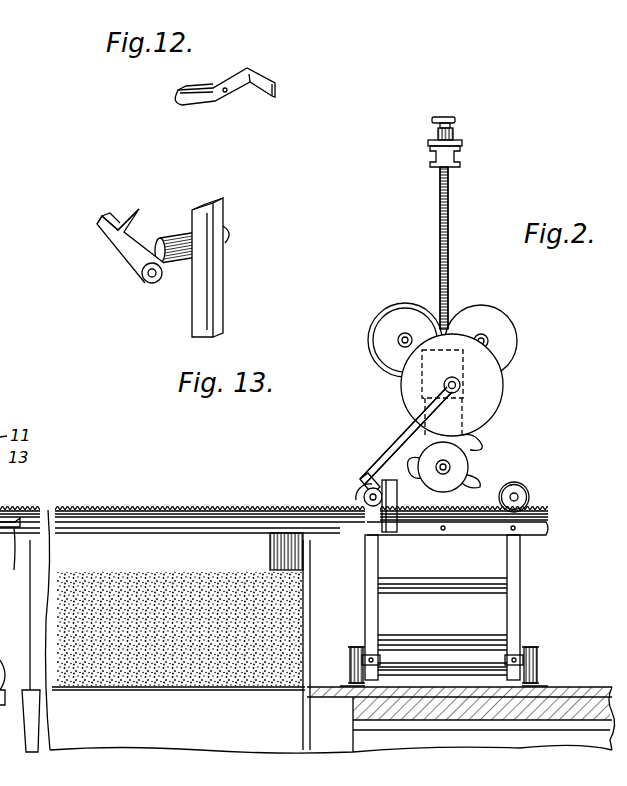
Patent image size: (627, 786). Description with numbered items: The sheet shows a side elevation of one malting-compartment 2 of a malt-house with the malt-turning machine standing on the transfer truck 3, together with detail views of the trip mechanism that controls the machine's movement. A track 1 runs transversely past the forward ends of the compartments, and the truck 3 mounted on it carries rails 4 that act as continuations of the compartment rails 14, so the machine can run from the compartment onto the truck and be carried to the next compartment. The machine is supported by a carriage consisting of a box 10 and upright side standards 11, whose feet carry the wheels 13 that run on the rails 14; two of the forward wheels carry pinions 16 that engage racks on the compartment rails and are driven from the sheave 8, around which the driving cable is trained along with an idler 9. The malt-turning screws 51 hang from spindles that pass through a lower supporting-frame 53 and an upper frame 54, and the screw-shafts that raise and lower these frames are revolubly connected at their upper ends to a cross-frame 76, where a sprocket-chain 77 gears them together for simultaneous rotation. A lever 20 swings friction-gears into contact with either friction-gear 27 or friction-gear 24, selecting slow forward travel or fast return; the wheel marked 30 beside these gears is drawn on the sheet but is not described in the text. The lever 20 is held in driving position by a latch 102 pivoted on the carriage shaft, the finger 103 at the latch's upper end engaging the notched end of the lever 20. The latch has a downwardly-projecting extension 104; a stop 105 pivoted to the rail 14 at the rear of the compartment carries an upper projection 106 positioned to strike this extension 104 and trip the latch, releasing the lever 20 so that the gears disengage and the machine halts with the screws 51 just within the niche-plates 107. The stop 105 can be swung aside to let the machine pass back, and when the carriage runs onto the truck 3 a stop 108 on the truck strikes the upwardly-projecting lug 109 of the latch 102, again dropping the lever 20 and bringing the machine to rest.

In FIG. 2, the track 1 is at (363, 684).
In FIG. 2, the malting-compartment 2 is at (163, 631).
In FIG. 2, the truck 3 is at (513, 628).
In FIG. 2, the rails 4 is at (538, 525).
In FIG. 2, the sheave 8 is at (497, 391).
In FIG. 2, the idler 9 is at (462, 466).
In FIG. 2, the box 10 is at (7, 337).
In FIG. 2, the upright side standards 11 is at (410, 425).
In FIG. 2, the wheels 13 is at (527, 482).
In FIG. 2, the rails 14 is at (177, 522).
In FIG. 2, the pinions 16 is at (0, 486).
In FIG. 2, the lever 20 is at (396, 442).
In FIG. 2, the friction-gear 24 is at (516, 336).
In FIG. 2, the friction-gear 27 is at (383, 333).
In FIG. 2, the pulley rim 30 is at (393, 304).
In FIG. 2, the malt-turning screws 51 is at (477, 438).
In FIG. 2, the supporting-frame 53 is at (9, 384).
In FIG. 2, the frame 54 is at (428, 153).
In FIG. 2, the cross-frame 76 is at (436, 134).
In FIG. 2, the sprocket-chain 77 is at (451, 117).
In FIG. 13, the latch 102 is at (138, 256).
In FIG. 2, the latch 102 is at (359, 486).
In FIG. 13, the finger 103 is at (128, 212).
In FIG. 13, the extension 104 is at (225, 327).
In FIG. 2, the extension 104 is at (370, 513).
In FIG. 12, the stop 105 is at (224, 82).
In FIG. 2, the stop 105 is at (11, 555).
In FIG. 12, the upper projection 106 is at (279, 92).
In FIG. 2, the niche-plates 107 is at (310, 643).
In FIG. 2, the stop 108 is at (400, 494).
In FIG. 13, the upwardly-projecting lug 109 is at (222, 208).
In FIG. 2, the upwardly-projecting lug 109 is at (369, 477).